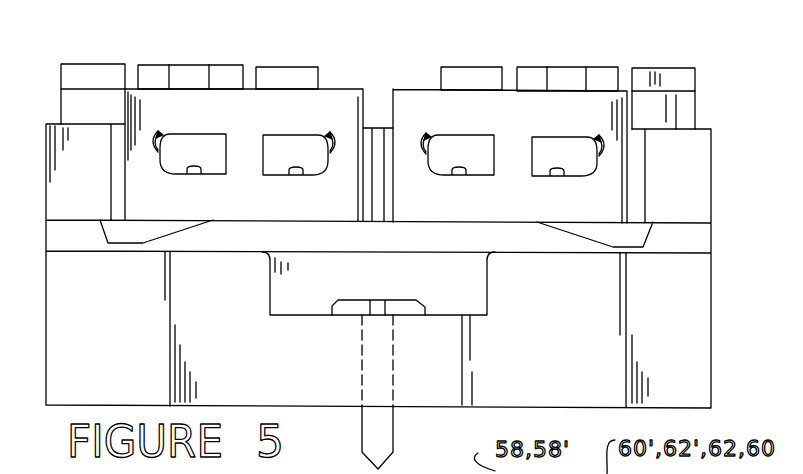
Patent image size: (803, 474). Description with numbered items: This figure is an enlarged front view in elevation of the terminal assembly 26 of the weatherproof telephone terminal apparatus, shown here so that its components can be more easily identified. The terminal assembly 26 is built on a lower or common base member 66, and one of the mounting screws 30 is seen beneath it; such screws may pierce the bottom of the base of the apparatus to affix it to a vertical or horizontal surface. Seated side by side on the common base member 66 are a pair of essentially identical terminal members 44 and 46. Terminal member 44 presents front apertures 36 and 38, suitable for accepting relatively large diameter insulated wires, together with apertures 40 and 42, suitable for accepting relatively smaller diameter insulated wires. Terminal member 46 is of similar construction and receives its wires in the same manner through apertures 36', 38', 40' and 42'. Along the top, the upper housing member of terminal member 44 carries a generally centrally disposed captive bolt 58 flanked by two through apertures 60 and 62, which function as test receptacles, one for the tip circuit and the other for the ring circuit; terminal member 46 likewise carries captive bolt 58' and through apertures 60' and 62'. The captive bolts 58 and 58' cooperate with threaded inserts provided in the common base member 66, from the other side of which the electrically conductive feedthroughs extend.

The terminal assembly 26 is at (723, 121).
The screw 30 is at (427, 306).
The front aperture 36 is at (295, 177).
The front aperture 38 is at (193, 176).
The front aperture 36' is at (460, 176).
The front aperture 38' is at (558, 177).
The aperture 40 is at (341, 122).
The aperture 42 is at (150, 122).
The aperture 40' is at (428, 126).
The aperture 42' is at (591, 127).
The terminal member 44 is at (160, 208).
The terminal member 46 is at (600, 200).
The captive bolt 58 is at (194, 47).
The through aperture 60 is at (93, 69).
The through aperture 62 is at (288, 54).
The captive bolt 58' is at (568, 50).
The through aperture 60' is at (675, 75).
The through aperture 62' is at (474, 55).
The common base member 66 is at (662, 373).